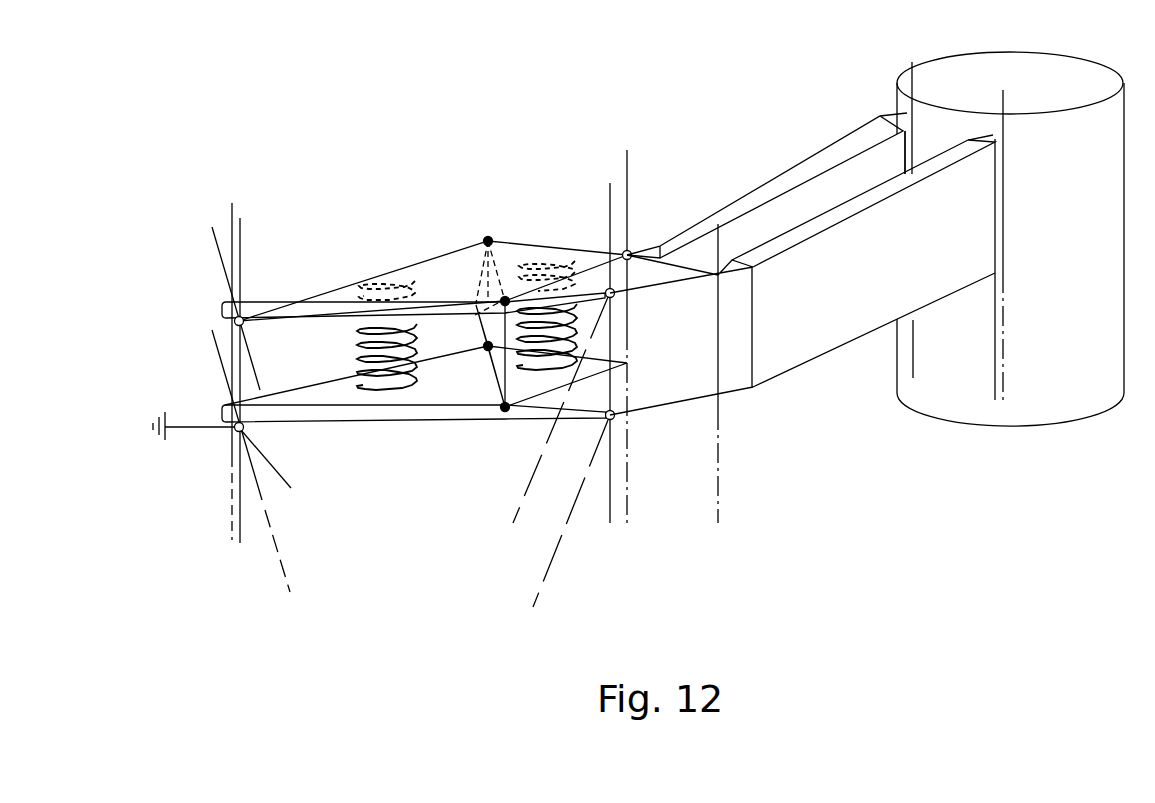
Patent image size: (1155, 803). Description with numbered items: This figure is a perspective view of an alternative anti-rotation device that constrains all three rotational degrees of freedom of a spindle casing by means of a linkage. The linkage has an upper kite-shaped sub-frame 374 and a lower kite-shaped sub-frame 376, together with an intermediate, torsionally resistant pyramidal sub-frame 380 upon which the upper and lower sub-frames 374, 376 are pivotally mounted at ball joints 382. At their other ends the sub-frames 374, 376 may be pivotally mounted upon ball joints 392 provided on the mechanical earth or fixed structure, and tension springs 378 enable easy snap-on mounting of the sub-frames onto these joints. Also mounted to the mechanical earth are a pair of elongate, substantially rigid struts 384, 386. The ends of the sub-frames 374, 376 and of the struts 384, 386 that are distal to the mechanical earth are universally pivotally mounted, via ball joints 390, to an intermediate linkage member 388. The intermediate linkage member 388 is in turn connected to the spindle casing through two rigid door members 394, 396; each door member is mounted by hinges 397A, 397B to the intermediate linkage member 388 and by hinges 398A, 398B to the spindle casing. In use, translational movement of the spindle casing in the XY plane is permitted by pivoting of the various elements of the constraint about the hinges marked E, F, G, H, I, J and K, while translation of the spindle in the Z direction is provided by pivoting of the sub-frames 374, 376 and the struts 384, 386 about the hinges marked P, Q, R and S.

The upper kite-shaped sub-frame 374 is at (447, 270).
The lower kite-shaped sub-frame 376 is at (300, 406).
The tension springs 378 is at (410, 280).
The pyramidal sub-frame 380 is at (458, 348).
The ball joints 382 is at (488, 238).
The elongate rigid strut 384 is at (325, 315).
The elongate rigid strut 386 is at (373, 423).
The intermediate linkage member 388 is at (700, 333).
The ball joints 390 is at (616, 296).
The ball joints 392 is at (258, 307).
The rigid door member 394 is at (827, 153).
The rigid door member 396 is at (852, 207).
The hinge 397A is at (627, 371).
The hinge 397B is at (720, 372).
The hinge 398A is at (913, 137).
The hinge 398B is at (1005, 165).
The hinge E is at (233, 202).
The hinge F is at (240, 232).
The hinge G is at (607, 197).
The hinge H is at (627, 160).
The hinge I is at (717, 227).
The hinge J is at (908, 73).
The hinge K is at (1007, 93).
The hinge P is at (291, 488).
The hinge Q is at (287, 570).
The hinge R is at (522, 490).
The hinge S is at (538, 575).